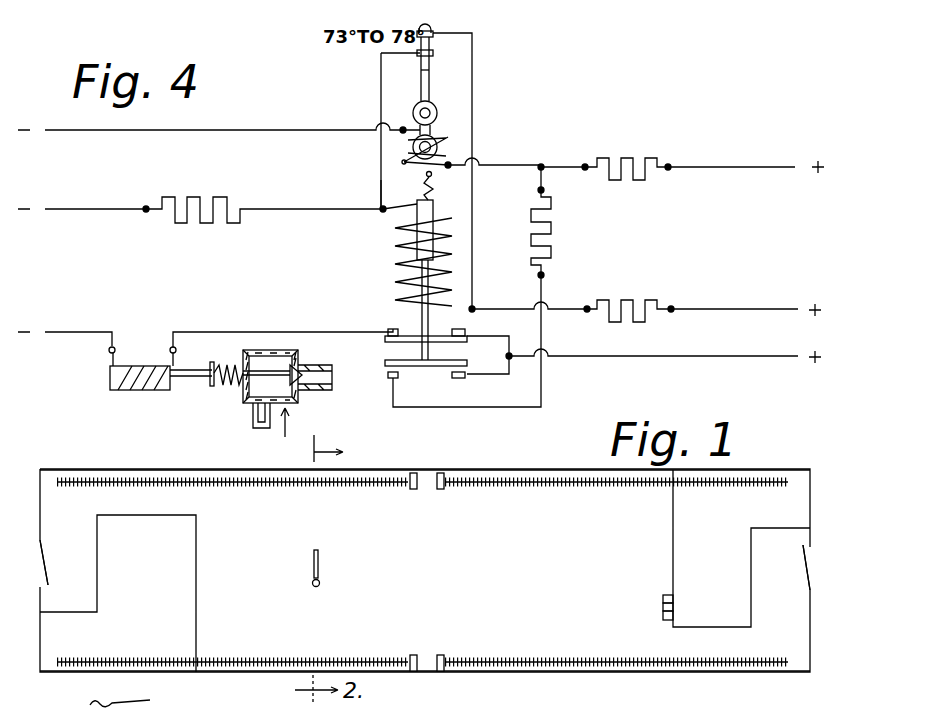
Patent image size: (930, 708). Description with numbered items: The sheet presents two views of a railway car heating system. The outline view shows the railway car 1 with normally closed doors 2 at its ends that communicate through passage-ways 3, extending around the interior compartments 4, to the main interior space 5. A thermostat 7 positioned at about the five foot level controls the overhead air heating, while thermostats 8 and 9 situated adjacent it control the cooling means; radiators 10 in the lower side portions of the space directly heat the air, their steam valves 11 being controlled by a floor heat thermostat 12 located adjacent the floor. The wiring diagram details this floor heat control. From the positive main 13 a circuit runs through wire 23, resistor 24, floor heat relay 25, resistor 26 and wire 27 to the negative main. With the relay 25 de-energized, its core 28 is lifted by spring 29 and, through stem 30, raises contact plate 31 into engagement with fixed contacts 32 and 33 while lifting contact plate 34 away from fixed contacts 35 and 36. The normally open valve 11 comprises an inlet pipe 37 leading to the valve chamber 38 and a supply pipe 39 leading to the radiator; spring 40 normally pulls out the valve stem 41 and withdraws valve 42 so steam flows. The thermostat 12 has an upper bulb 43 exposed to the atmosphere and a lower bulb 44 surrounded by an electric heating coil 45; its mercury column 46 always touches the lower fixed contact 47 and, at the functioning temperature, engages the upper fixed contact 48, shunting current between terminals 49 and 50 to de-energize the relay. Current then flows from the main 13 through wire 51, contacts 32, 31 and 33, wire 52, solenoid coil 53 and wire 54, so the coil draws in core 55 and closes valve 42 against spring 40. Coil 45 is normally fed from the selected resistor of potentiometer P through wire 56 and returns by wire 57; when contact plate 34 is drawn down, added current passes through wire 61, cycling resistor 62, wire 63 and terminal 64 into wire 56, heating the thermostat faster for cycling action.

In FIG. 1, the railway car 1 is at (464, 470).
In FIG. 4, the doors 2 is at (341, 450).
In FIG. 1, the doors 2 is at (822, 563).
In FIG. 1, the passage-ways 3 is at (728, 652).
In FIG. 1, the interior compartments 4 is at (688, 530).
In FIG. 1, the main interior space 5 is at (481, 577).
In FIG. 1, the thermostat 7 is at (663, 598).
In FIG. 1, the thermostat 8 is at (663, 609).
In FIG. 1, the thermostat 9 is at (663, 620).
In FIG. 1, the radiators 10 is at (560, 660).
In FIG. 4, the valves 11 is at (299, 432).
In FIG. 1, the valves 11 is at (440, 637).
In FIG. 4, the floor heat thermostat 12 is at (463, 94).
In FIG. 1, the floor heat thermostat 12 is at (320, 565).
In FIG. 4, the positive main 13 is at (723, 168).
In FIG. 4, the wire 23 is at (732, 310).
In FIG. 4, the resistor 24 is at (642, 300).
In FIG. 4, the floor heat relay 25 is at (393, 260).
In FIG. 4, the resistor 26 is at (228, 198).
In FIG. 4, the wire 27 is at (117, 186).
In FIG. 4, the core 28 is at (434, 208).
In FIG. 4, the spring 29 is at (431, 188).
In FIG. 4, the stem 30 is at (428, 322).
In FIG. 4, the contact plate 31 is at (445, 342).
In FIG. 4, the fixed contact 32 is at (468, 333).
In FIG. 4, the fixed contact 33 is at (397, 330).
In FIG. 4, the contact plate 34 is at (413, 367).
In FIG. 4, the fixed contact 35 is at (460, 378).
In FIG. 4, the fixed contact 36 is at (395, 390).
In FIG. 4, the inlet pipe 37 is at (265, 428).
In FIG. 4, the valve chamber 38 is at (282, 360).
In FIG. 4, the supply pipe 39 is at (322, 378).
In FIG. 4, the spring 40 is at (228, 387).
In FIG. 4, the valve stem 41 is at (267, 372).
In FIG. 4, the valve 42 is at (298, 390).
In FIG. 4, the upper bulb 43 is at (437, 110).
In FIG. 4, the lower bulb 44 is at (447, 139).
In FIG. 4, the electric heating coil 45 is at (401, 178).
In FIG. 4, the mercury column 46 is at (427, 80).
In FIG. 4, the lower fixed contact 47 is at (418, 54).
In FIG. 4, the upper fixed contact 48 is at (437, 30).
In FIG. 4, the terminal 49 is at (378, 206).
In FIG. 4, the terminal 50 is at (476, 305).
In FIG. 4, the wire 51 is at (703, 357).
In FIG. 4, the wire 52 is at (270, 332).
In FIG. 4, the solenoid coil 53 is at (135, 387).
In FIG. 4, the wire 54 is at (85, 332).
In FIG. 4, the core 55 is at (115, 391).
In FIG. 4, the wire 56 is at (505, 163).
In FIG. 4, the wire 57 is at (213, 131).
In FIG. 4, the wire 61 is at (543, 392).
In FIG. 4, the cycling resistor 62 is at (552, 252).
In FIG. 4, the wire 63 is at (543, 178).
In FIG. 4, the terminal 64 is at (542, 166).
In FIG. 4, the potentiometer P is at (639, 146).